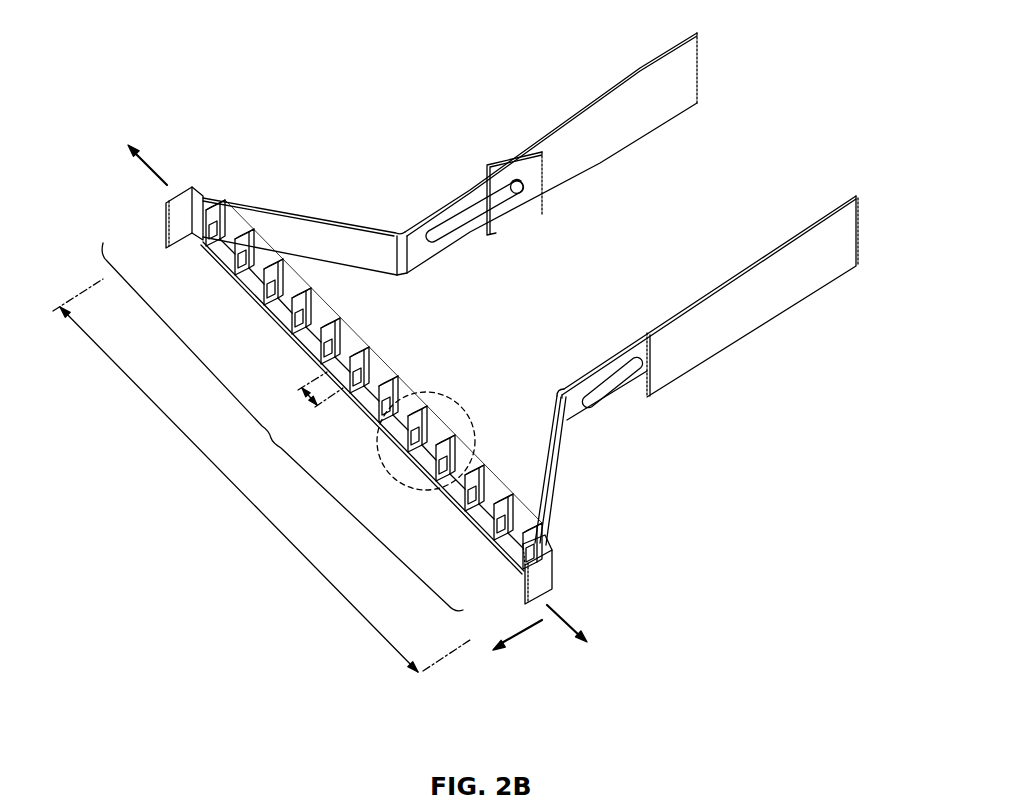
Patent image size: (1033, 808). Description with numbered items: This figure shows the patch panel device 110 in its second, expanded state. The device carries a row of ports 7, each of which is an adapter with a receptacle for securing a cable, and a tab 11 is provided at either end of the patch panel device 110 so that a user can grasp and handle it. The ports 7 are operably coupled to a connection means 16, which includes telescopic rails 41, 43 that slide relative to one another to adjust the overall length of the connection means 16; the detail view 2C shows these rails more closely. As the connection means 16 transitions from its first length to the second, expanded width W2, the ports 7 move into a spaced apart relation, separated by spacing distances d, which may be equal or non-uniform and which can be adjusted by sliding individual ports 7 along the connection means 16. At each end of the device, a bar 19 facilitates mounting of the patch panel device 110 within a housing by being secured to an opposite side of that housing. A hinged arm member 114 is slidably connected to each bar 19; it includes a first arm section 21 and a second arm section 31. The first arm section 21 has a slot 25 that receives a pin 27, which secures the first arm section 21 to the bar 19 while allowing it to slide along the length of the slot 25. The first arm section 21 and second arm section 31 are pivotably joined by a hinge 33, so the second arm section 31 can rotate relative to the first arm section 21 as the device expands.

The patch panel device 110 is at (152, 75).
The tab 11 is at (177, 210).
The second arm section 31 is at (255, 220).
The hinge 33 is at (401, 240).
The first arm section 21 is at (420, 253).
The bar 19 is at (685, 82).
The slot 25 is at (447, 220).
The pin 27 is at (518, 193).
The port 7 is at (353, 357).
The telescopic rail 41 is at (488, 490).
The telescopic rail 43 is at (485, 530).
The hinged arm member 114 is at (319, 190).
The connection means 16 is at (282, 427).
The detail view circle 2C is at (438, 390).
The second expanded width W2 is at (234, 486).
The spacing distance d is at (302, 397).